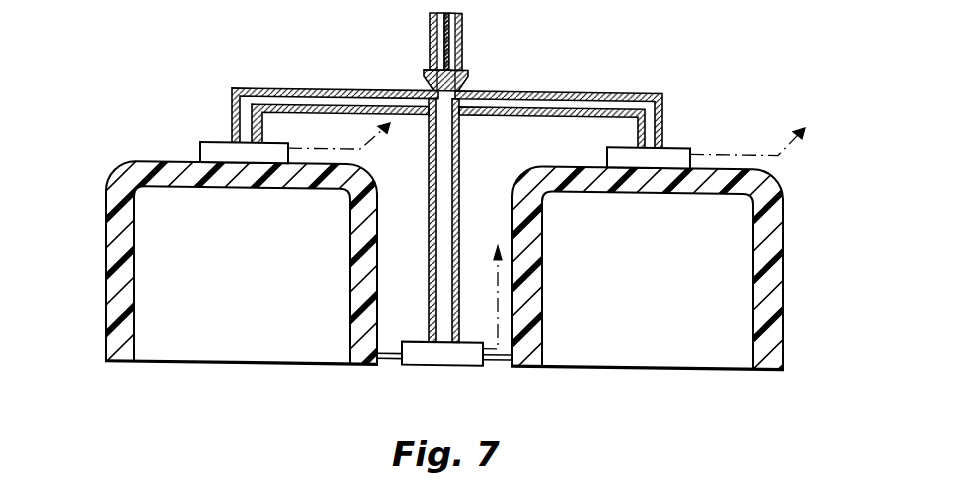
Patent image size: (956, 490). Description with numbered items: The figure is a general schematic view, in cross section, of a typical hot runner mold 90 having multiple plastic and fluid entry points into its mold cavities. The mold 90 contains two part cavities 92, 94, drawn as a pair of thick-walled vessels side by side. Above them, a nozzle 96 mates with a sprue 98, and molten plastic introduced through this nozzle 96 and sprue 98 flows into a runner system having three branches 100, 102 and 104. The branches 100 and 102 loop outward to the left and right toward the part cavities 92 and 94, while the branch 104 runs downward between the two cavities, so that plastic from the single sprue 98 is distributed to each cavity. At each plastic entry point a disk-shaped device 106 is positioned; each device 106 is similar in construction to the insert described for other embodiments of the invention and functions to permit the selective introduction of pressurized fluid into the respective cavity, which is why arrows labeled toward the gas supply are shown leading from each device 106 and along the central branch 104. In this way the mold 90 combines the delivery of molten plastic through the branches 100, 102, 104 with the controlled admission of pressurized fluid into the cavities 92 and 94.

The mold 90 is at (107, 156).
The part cavity 92 is at (106, 287).
The part cavity 94 is at (776, 288).
The nozzle 96 is at (430, 22).
The sprue 98 is at (470, 78).
The runner branch 100 is at (270, 90).
The runner branch 102 is at (588, 88).
The runner branch 104 is at (459, 145).
The disk-shaped device 106 is at (208, 145).